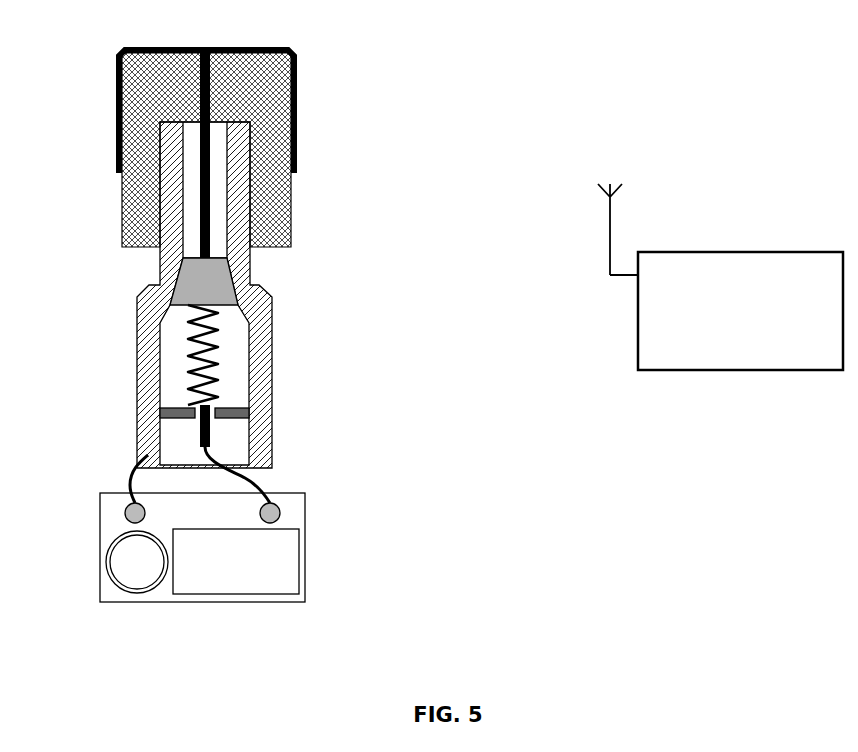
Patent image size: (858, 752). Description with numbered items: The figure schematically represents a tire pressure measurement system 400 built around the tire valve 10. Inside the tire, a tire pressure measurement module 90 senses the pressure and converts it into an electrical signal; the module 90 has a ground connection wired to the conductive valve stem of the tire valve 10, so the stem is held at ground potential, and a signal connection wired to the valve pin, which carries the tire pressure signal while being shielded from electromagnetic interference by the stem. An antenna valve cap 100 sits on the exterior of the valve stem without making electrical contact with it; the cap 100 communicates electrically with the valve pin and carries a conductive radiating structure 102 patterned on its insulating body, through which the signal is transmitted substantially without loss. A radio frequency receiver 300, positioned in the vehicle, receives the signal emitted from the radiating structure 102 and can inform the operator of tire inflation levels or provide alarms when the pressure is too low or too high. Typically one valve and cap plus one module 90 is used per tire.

The tire valve 10 is at (301, 355).
The tire pressure measurement module 90 is at (162, 593).
The antenna valve cap 100 is at (260, 131).
The conductive radiating structure 102 is at (293, 50).
The radio frequency receiver 300 is at (780, 252).
The tire pressure measurement system 400 is at (671, 80).